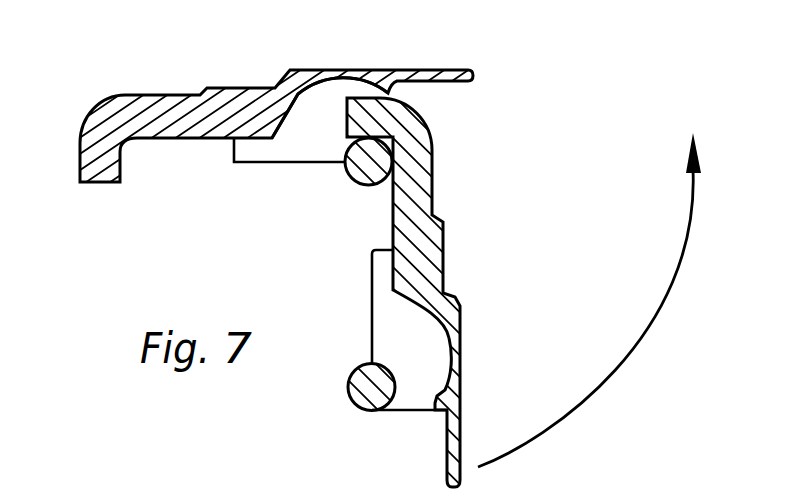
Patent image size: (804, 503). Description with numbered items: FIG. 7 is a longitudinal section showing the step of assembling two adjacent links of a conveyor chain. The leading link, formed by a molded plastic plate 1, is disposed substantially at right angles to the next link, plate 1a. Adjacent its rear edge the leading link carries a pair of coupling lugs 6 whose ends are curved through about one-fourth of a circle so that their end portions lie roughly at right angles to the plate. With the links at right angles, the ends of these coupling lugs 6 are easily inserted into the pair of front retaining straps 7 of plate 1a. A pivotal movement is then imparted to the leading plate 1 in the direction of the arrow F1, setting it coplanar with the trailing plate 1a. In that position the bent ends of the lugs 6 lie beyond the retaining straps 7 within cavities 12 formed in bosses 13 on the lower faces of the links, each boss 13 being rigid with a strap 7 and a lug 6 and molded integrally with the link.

The plate 1 is at (450, 268).
The plate 1a is at (230, 83).
The coupling lugs 6 is at (84, 166).
The retaining straps 7 is at (347, 167).
The cavities 12 is at (290, 110).
The bosses 13 is at (234, 164).
The arrow F1 is at (589, 300).